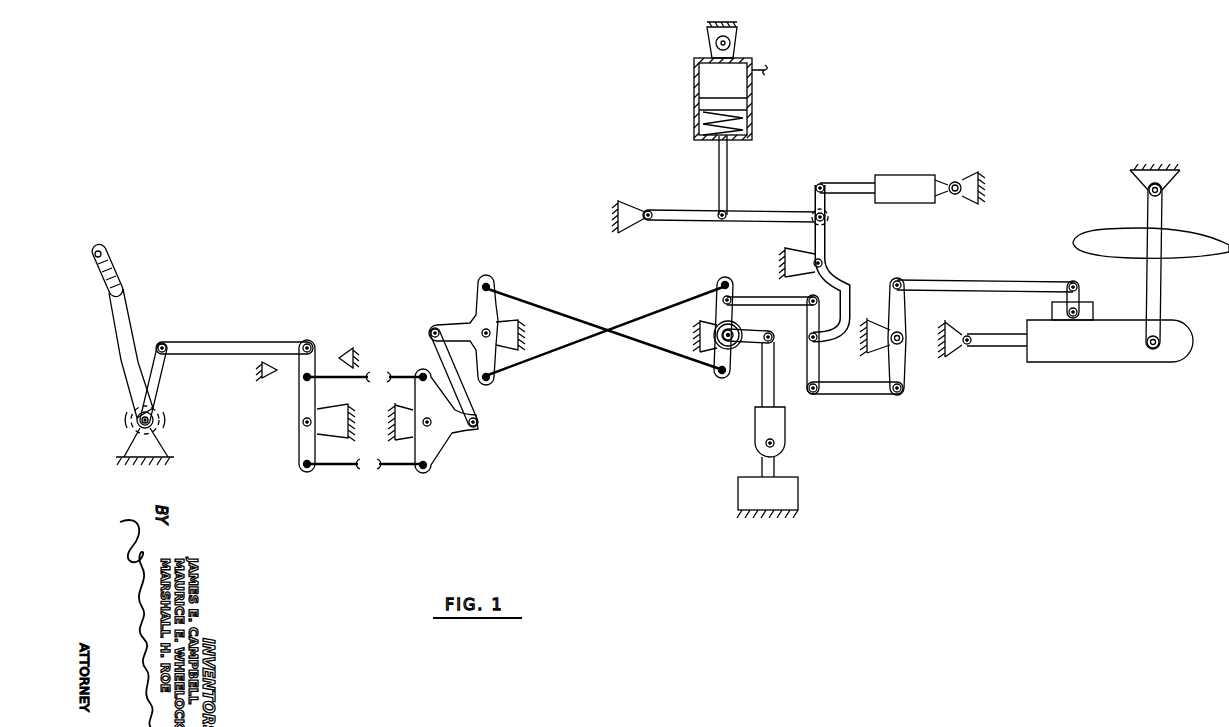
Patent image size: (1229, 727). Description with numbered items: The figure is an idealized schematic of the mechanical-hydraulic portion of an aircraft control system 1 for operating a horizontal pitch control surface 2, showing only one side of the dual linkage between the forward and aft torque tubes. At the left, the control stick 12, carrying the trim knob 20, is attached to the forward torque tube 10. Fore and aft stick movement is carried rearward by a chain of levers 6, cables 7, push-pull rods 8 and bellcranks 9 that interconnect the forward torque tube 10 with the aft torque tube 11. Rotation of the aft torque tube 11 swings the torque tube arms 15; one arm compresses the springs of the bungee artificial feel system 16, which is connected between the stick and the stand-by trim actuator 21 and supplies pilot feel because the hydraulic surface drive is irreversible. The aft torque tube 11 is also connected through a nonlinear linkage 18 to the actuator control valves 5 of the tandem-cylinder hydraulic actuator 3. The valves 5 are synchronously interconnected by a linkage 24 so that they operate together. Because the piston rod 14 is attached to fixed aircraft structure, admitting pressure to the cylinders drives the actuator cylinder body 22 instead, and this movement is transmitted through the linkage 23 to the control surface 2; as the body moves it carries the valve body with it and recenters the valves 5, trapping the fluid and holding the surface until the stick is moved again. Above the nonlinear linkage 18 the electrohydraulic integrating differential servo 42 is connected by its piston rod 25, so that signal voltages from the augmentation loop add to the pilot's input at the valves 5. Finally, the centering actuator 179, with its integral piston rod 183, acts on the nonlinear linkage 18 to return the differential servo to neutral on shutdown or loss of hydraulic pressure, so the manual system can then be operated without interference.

The aircraft mechanical-hydraulic control system 1 is at (358, 311).
The horizontal pitch control surface 2 is at (1180, 243).
The tandem-cylinder hydraulic actuator 3 is at (1067, 369).
The actuator control valves 5 is at (1055, 307).
The levers 6 is at (153, 383).
The cables 7 is at (410, 377).
The push-pull rods 8 is at (220, 347).
The bellcranks 9 is at (460, 330).
The forward torque tube 10 is at (162, 423).
The aft torque tube 11 is at (733, 345).
The control stick 12 is at (122, 327).
The piston rod 14 is at (985, 346).
The torque tube arms 15 is at (703, 318).
The bungee artificial feel system 16 is at (762, 422).
The nonlinear linkage 18 is at (866, 269).
The trim knob 20 is at (99, 250).
The stand-by trim actuator 21 is at (757, 490).
The actuator cylinder body 22 is at (1103, 345).
The linkage 23 is at (1155, 292).
The linkage 24 is at (1080, 292).
The piston rod 25 is at (840, 183).
The electrohydraulic integrating differential servo 42 is at (900, 178).
The centering actuator 179 is at (753, 97).
The piston rod 183 is at (720, 173).